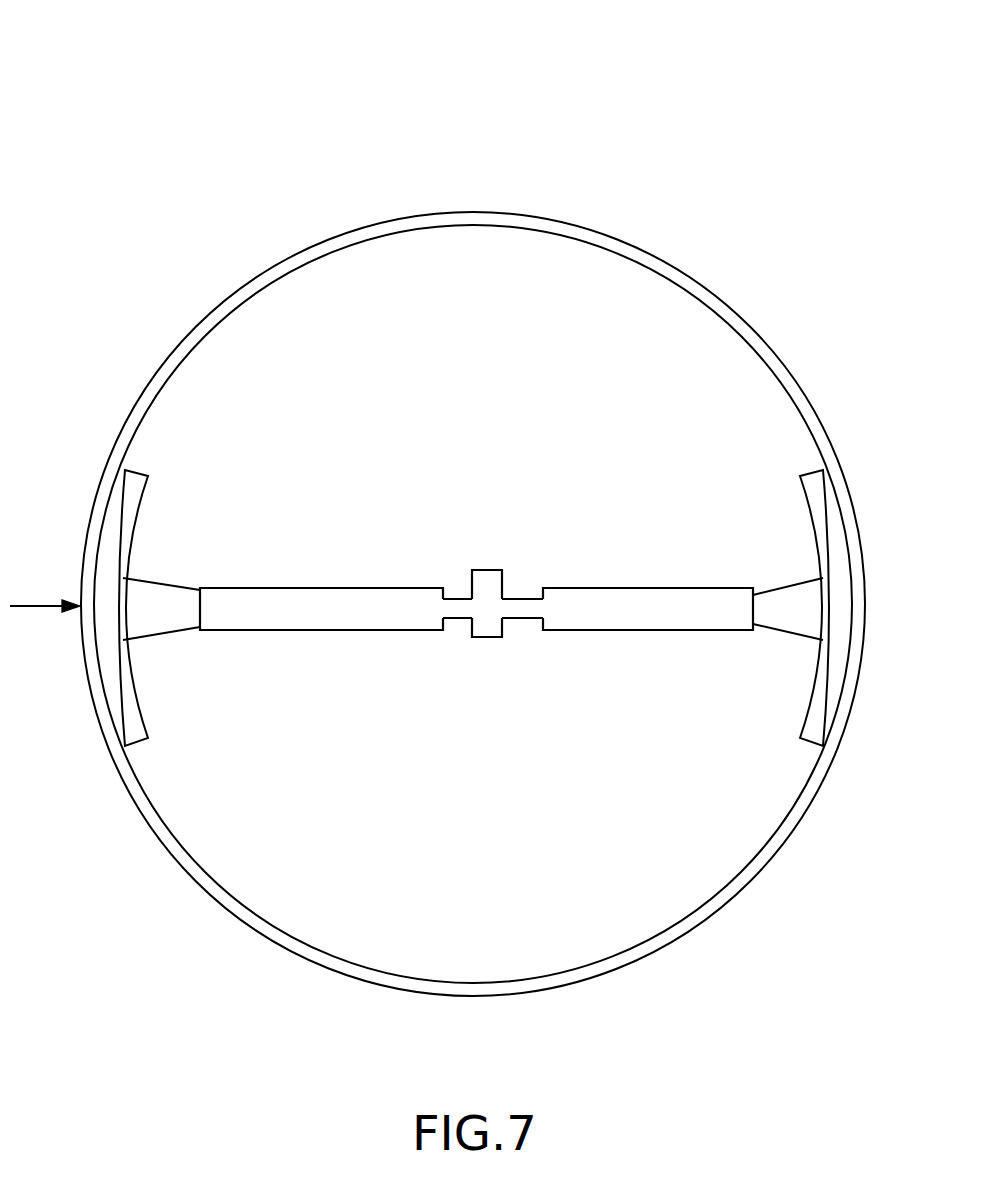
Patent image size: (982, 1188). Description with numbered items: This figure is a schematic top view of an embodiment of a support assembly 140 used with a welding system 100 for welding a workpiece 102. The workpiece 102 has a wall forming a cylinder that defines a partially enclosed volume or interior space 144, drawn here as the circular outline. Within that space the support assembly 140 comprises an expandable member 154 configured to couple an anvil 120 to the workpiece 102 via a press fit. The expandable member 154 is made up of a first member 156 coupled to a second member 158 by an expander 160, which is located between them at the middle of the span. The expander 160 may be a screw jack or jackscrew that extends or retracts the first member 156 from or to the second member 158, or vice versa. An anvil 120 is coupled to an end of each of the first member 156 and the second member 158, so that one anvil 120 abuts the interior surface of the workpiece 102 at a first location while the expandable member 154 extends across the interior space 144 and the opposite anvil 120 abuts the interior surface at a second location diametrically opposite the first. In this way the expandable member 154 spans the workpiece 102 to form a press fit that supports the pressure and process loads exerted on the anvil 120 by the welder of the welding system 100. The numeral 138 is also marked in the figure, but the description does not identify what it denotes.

The welding system 100 is at (144, 114).
The workpiece 102 is at (213, 308).
The anvil 120 is at (127, 542).
The incoming light 138 is at (40, 605).
The support assembly 140 is at (556, 424).
The interior space 144 is at (643, 292).
The expandable member 154 is at (567, 507).
The first member 156 is at (316, 654).
The second member 158 is at (621, 660).
The expander 160 is at (468, 542).